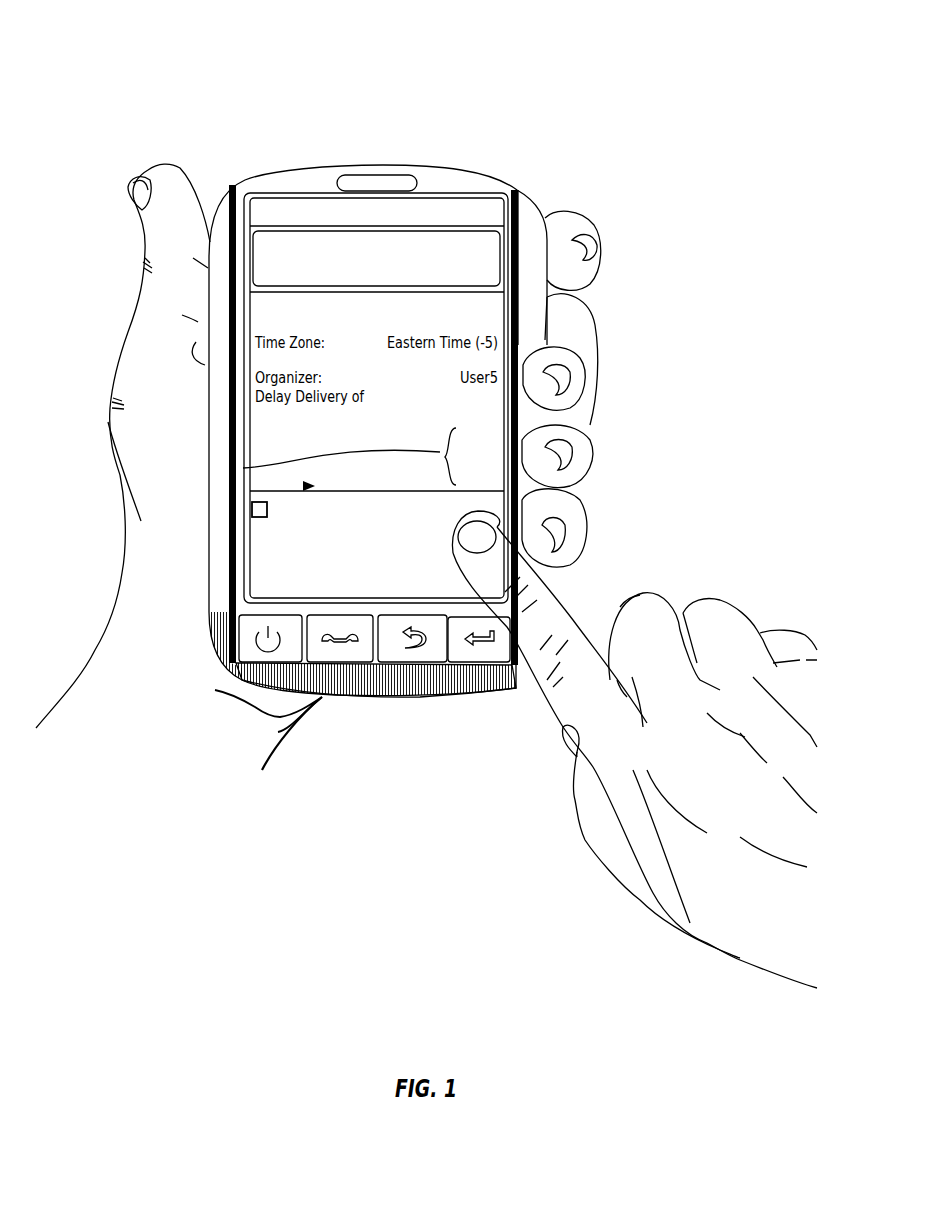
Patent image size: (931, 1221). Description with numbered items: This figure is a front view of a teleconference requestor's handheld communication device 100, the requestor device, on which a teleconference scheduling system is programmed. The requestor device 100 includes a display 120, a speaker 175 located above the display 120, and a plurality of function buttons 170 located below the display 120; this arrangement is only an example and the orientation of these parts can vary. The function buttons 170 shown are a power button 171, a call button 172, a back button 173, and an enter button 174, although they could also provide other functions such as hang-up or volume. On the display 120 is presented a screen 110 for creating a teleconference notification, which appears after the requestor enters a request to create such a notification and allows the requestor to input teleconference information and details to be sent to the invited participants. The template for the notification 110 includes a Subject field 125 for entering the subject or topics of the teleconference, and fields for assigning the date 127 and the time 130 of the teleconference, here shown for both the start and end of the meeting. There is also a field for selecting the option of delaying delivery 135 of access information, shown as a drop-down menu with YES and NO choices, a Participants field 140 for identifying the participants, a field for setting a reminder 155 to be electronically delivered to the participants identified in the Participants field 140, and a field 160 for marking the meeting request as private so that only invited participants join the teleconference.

The handheld communication device 100 is at (463, 83).
The screen for creating a teleconference notification 110 is at (303, 483).
The display 120 is at (487, 193).
The Subject field 125 is at (472, 265).
The date 127 is at (393, 297).
The time 130 is at (500, 307).
The option of delaying delivery of access information 135 is at (500, 422).
The Participants field 140 is at (243, 468).
The reminder field 155 is at (255, 362).
The field for marking the meeting request as private 160 is at (253, 520).
The function buttons 170 is at (380, 678).
The power button 171 is at (262, 650).
The call button 172 is at (340, 657).
The back button 173 is at (407, 655).
The enter button 174 is at (480, 650).
The speaker 175 is at (373, 170).